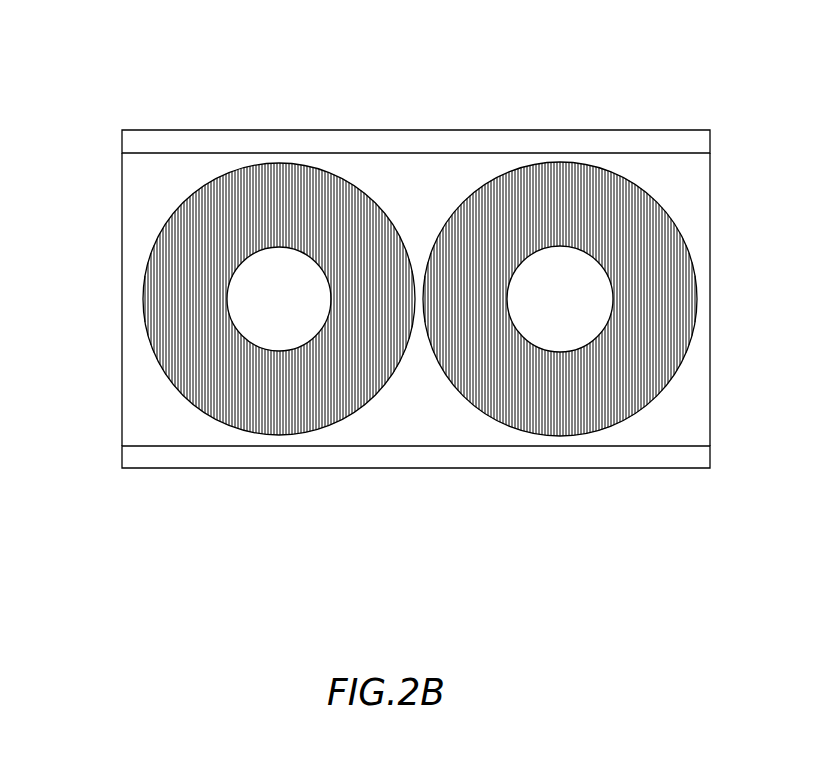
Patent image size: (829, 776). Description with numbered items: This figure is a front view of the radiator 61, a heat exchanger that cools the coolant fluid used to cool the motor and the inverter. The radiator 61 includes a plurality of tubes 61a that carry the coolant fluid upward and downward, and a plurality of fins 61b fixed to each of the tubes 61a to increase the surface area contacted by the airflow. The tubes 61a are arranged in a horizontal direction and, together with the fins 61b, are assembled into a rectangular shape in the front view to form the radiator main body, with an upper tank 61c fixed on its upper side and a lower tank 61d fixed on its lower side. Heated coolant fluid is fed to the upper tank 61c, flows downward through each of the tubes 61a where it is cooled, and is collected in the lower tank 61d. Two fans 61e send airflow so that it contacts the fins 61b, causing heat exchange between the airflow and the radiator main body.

The radiator 61 is at (93, 79).
The tubes 61a is at (280, 198).
The fins 61b is at (471, 230).
The upper tank 61c is at (415, 130).
The lower tank 61d is at (415, 468).
The fans 61e is at (248, 389).